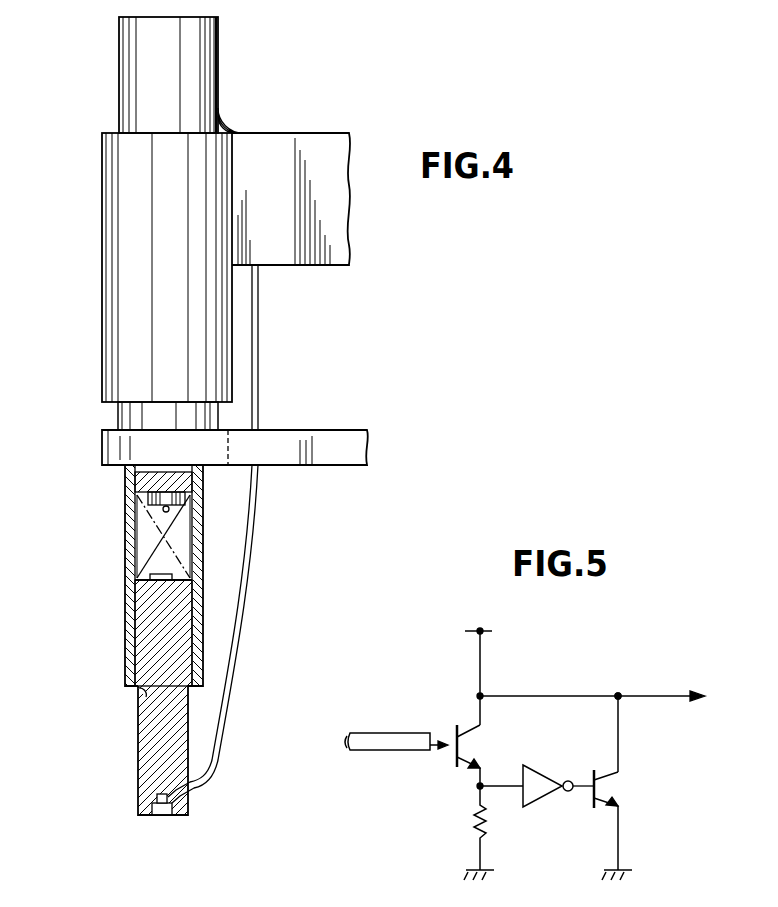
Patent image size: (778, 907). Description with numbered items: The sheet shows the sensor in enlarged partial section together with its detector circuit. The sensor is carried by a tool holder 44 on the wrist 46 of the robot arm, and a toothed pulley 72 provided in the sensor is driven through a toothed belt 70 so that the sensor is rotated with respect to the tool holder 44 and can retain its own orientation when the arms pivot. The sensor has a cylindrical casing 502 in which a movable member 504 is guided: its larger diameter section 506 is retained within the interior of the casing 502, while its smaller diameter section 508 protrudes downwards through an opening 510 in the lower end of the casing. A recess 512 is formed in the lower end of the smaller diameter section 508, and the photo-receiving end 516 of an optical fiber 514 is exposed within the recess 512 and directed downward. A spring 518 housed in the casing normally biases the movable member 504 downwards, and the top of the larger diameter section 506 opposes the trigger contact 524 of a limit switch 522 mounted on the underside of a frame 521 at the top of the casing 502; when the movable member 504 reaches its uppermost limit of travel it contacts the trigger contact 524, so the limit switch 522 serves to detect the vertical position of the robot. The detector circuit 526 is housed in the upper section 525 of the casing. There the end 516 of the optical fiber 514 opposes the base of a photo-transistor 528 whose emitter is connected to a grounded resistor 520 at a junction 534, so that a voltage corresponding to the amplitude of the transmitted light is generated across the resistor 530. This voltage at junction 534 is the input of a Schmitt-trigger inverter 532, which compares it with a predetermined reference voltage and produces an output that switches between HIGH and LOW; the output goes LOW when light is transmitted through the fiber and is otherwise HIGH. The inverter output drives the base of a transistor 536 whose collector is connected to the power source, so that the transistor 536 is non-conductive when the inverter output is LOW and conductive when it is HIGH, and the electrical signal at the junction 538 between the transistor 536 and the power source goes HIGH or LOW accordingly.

In FIG. 4, the tool holder 44 is at (100, 235).
In FIG. 4, the wrist 46 is at (318, 133).
In FIG. 4, the toothed belt 70 is at (352, 430).
In FIG. 4, the toothed pulley 72 is at (231, 446).
In FIG. 4, the cylindrical casing 502 is at (126, 605).
In FIG. 4, the movable member 504 is at (124, 655).
In FIG. 4, the larger diameter section 506 is at (186, 630).
In FIG. 4, the smaller diameter section 508 is at (140, 752).
In FIG. 4, the opening 510 is at (138, 692).
In FIG. 4, the recess 512 is at (166, 815).
In FIG. 4, the optical fiber 514 is at (226, 698).
In FIG. 5, the optical fiber 514 is at (380, 735).
In FIG. 4, the photo-receiving end 516 is at (154, 816).
In FIG. 4, the spring 518 is at (202, 545).
In FIG. 4, the grounded resistor 520 is at (152, 575).
In FIG. 4, the frame 521 is at (186, 490).
In FIG. 4, the limit switch 522 is at (150, 494).
In FIG. 4, the trigger contact 524 is at (152, 522).
In FIG. 4, the upper section 525 is at (222, 45).
In FIG. 5, the detector circuit 526 is at (577, 650).
In FIG. 5, the photo-transistor 528 is at (470, 748).
In FIG. 5, the resistor 530 is at (486, 822).
In FIG. 5, the Schmitt-trigger inverter 532 is at (550, 802).
In FIG. 5, the junction 534 is at (478, 798).
In FIG. 5, the transistor 536 is at (605, 786).
In FIG. 5, the junction 538 is at (620, 690).